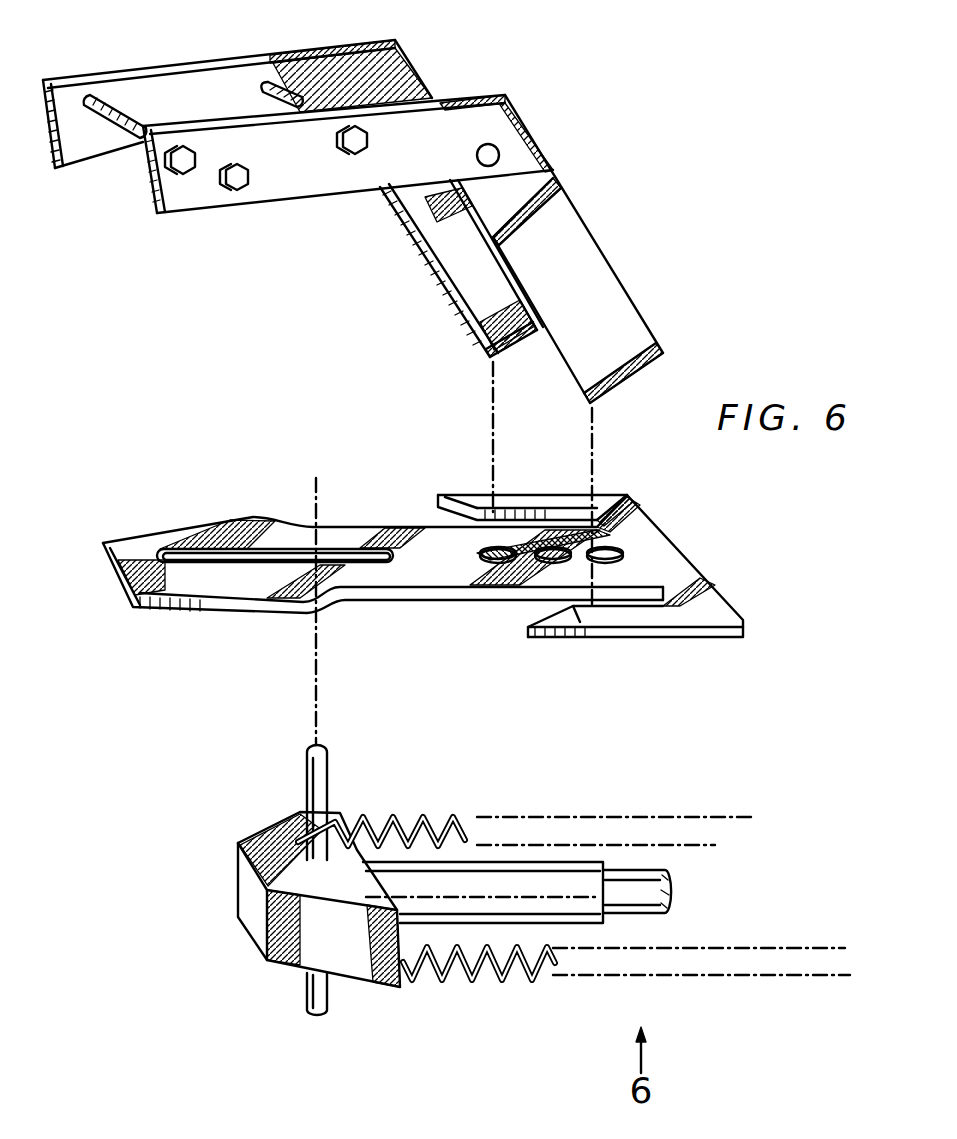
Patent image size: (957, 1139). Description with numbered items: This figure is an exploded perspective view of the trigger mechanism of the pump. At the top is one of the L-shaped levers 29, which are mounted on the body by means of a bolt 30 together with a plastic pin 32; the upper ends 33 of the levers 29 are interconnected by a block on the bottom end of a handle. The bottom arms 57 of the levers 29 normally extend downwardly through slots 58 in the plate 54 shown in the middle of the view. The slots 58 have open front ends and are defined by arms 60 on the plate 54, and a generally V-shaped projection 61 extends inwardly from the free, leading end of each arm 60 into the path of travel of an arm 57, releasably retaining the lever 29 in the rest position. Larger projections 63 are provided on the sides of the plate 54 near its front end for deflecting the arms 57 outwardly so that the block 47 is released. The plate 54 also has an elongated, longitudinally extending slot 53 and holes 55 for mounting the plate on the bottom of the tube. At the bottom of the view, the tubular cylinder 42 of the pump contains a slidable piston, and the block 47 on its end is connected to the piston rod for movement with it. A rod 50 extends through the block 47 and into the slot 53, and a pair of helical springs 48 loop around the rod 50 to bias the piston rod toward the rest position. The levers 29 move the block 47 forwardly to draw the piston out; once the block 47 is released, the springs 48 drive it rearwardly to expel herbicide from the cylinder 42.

The L-shaped lever 29 is at (353, 201).
The bolt 30 is at (270, 78).
The plastic pin 32 is at (499, 158).
The upper end 33 is at (163, 127).
The tubular cylinder 42 is at (570, 927).
The block 47 is at (293, 957).
The helical spring 48 is at (397, 823).
The rod 50 is at (310, 794).
The elongated slot 53 is at (435, 558).
The plate 54 is at (570, 558).
The hole 55 is at (620, 557).
The bottom arm 57 is at (527, 263).
The slot 58 is at (547, 507).
The arm 60 is at (583, 497).
The V-shaped projection 61 is at (472, 497).
The projection 63 is at (247, 517).